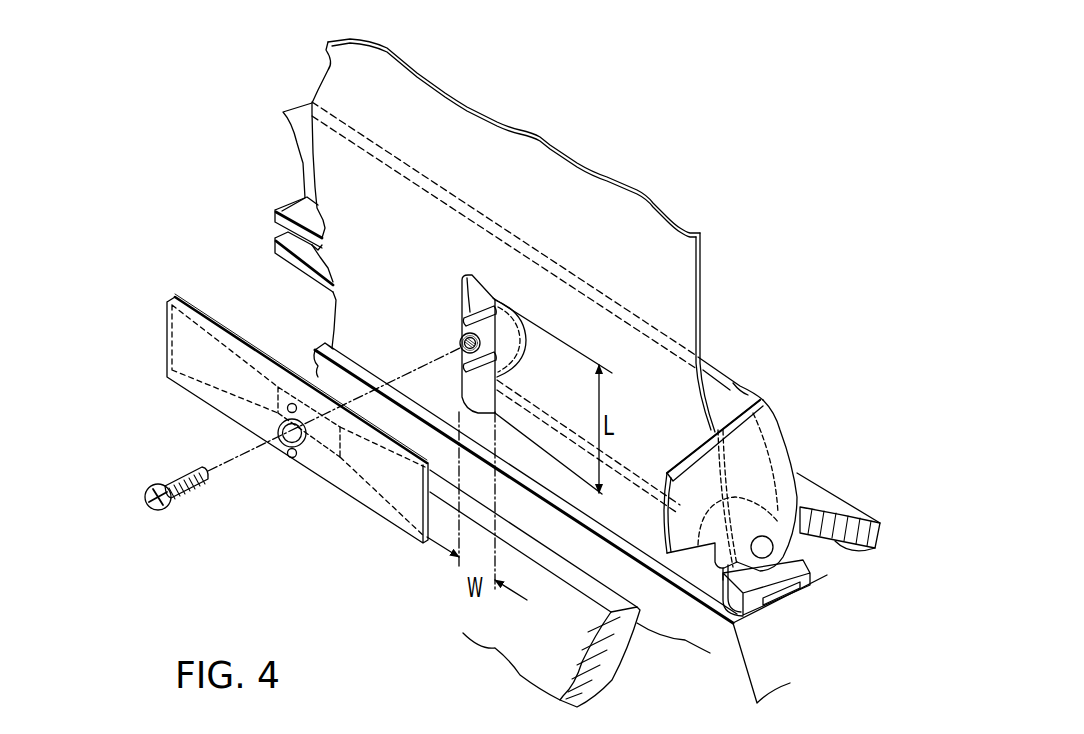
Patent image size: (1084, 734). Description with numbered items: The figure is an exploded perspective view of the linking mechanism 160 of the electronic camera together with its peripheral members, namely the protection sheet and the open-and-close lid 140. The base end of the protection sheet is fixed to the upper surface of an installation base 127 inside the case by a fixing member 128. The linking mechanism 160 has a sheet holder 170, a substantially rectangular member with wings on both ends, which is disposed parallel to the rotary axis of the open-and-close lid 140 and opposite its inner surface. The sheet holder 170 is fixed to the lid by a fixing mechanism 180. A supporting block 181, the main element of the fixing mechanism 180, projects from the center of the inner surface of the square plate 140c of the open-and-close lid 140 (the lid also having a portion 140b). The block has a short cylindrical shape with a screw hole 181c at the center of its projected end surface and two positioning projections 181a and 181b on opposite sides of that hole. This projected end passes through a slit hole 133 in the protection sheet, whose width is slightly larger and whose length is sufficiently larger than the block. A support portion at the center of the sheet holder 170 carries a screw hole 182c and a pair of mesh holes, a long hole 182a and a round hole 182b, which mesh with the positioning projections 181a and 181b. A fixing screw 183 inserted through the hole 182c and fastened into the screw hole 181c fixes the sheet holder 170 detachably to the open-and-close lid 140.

The installation base 127 is at (720, 653).
The fixing member 128 is at (826, 577).
The slit hole 133 is at (480, 283).
The open-and-close lid 140 is at (762, 450).
The hook plate portion 140b is at (690, 490).
The square plate 140c is at (727, 387).
The linking mechanism 160 is at (302, 473).
The sheet holder 170 is at (297, 397).
The fixing mechanism 180 is at (380, 288).
The supporting block 181 is at (457, 344).
The positioning projection 181a is at (463, 322).
The positioning projection 181b is at (463, 368).
The screw hole 181c is at (460, 344).
The mesh hole 182a is at (292, 403).
The mesh hole 182b is at (300, 458).
The screw hole 182c is at (287, 447).
The fixing screw 183 is at (168, 481).